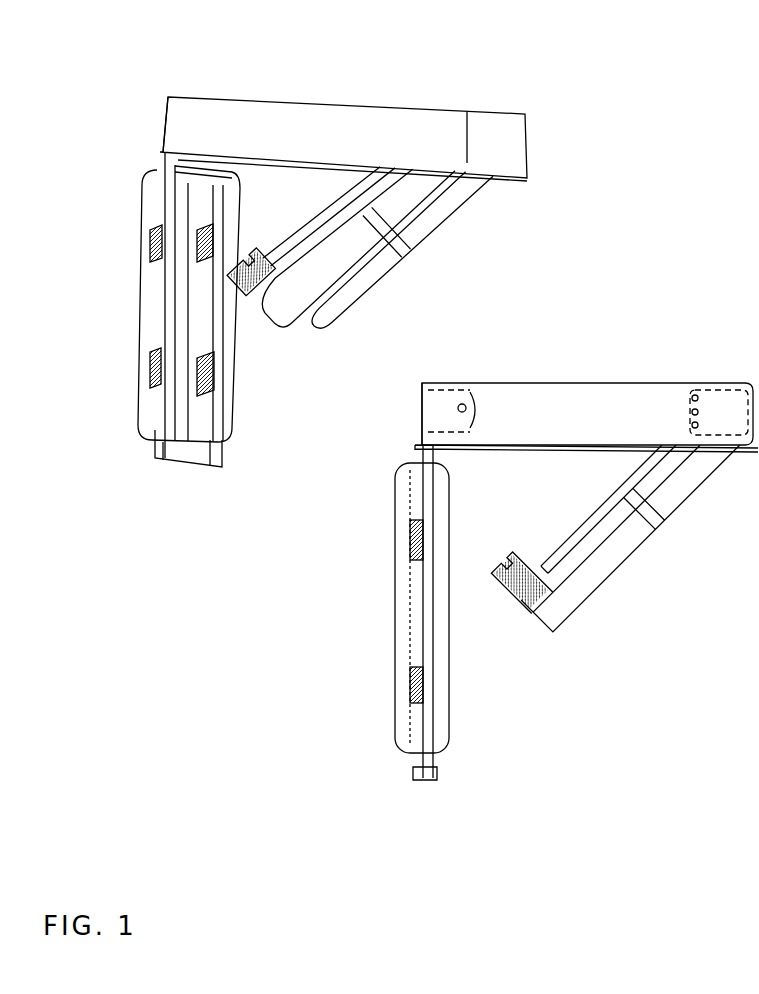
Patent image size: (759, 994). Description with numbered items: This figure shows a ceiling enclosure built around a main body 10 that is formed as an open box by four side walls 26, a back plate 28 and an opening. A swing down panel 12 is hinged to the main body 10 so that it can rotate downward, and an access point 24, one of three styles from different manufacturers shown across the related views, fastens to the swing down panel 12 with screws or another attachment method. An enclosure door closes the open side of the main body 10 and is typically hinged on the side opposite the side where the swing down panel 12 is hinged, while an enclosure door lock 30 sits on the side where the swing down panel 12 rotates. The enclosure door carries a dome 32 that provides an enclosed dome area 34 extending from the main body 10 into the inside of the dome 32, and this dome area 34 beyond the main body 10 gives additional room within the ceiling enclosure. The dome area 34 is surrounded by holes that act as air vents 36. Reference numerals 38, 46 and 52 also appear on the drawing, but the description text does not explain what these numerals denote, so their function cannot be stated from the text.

The main body 10 is at (422, 387).
The swing down panel 12 is at (565, 555).
The access point 24 is at (553, 612).
The side walls 26 is at (528, 412).
The back plate 28 is at (392, 130).
The enclosure door lock 30 is at (198, 467).
The dome 32 is at (148, 322).
The dome area 34 is at (180, 347).
The air vents 36 is at (150, 247).
The mounting plate 38 is at (688, 382).
The hinge plate 46 is at (438, 405).
The clamp 52 is at (513, 563).